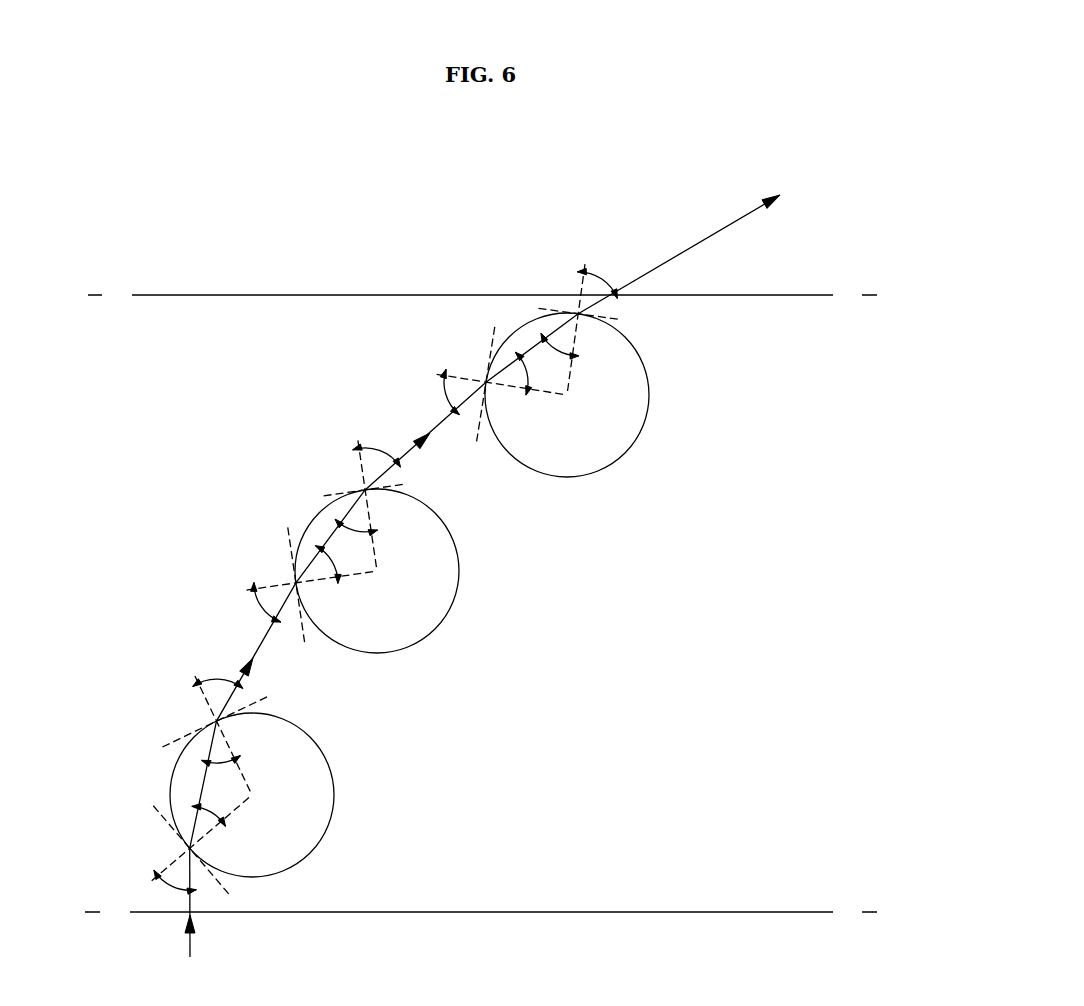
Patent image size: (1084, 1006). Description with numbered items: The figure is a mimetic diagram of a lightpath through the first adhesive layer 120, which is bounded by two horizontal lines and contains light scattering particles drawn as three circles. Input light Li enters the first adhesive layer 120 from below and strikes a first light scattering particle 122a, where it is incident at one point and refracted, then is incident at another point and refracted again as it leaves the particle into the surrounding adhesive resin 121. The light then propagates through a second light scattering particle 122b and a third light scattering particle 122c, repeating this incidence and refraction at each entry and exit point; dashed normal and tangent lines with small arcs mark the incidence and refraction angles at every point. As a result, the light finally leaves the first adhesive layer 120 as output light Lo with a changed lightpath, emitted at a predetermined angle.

The first adhesive layer 120 is at (267, 288).
The adhesive resin 121 is at (428, 323).
The first light scattering particle 122a is at (312, 735).
The second light scattering particle 122b is at (455, 593).
The third light scattering particle 122c is at (648, 393).
The input light Li is at (191, 916).
The output light Lo is at (693, 245).